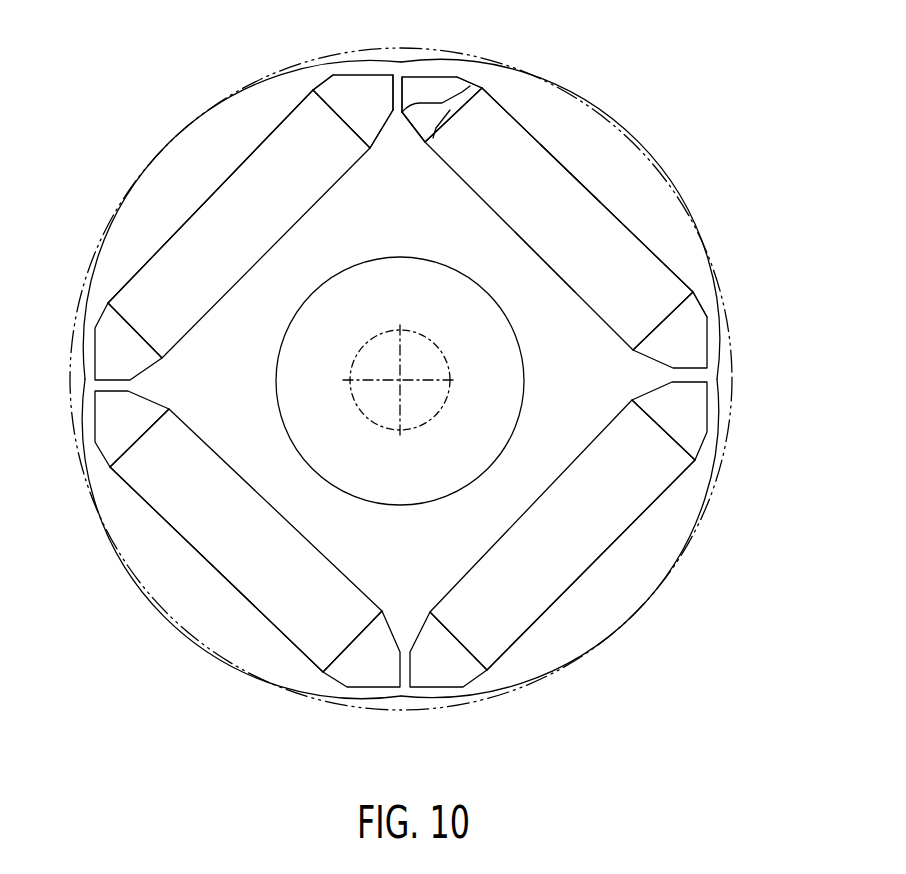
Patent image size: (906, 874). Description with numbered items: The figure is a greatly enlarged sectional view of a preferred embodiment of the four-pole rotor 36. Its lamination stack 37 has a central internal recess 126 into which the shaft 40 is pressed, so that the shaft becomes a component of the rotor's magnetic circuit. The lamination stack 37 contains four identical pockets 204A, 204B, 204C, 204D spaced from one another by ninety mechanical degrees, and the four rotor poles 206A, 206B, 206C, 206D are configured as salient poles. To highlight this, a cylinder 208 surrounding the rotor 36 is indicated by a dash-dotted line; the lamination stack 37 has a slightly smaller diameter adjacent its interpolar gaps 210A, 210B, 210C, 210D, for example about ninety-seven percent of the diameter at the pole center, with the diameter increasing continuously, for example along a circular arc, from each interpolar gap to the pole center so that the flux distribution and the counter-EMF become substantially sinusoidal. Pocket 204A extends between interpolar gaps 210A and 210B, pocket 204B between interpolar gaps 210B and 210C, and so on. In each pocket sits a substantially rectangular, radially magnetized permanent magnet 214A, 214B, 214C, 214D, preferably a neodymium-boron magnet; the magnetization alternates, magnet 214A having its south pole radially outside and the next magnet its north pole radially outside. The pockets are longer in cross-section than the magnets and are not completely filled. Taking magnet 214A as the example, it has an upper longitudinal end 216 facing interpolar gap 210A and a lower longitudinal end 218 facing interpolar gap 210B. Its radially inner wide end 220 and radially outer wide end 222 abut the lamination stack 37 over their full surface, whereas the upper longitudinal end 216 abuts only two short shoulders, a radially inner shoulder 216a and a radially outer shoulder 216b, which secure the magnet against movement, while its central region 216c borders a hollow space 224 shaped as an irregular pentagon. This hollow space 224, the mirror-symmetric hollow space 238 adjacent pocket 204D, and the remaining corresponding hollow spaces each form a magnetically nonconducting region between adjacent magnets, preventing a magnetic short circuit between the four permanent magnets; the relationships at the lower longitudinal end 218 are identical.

The rotor 36 is at (152, 70).
The lamination stack 37 is at (362, 251).
The shaft 40 is at (505, 363).
The internal recess 126 is at (487, 466).
The pocket 204A is at (629, 235).
The pocket 204B is at (624, 540).
The pocket 204C is at (250, 607).
The pocket 204D is at (234, 186).
The rotor pole 206A is at (641, 150).
The rotor pole 206B is at (632, 618).
The rotor pole 206C is at (160, 613).
The rotor pole 206D is at (158, 153).
The cylinder 208 is at (735, 390).
The interpolar gap 210A is at (397, 66).
The interpolar gap 210B is at (717, 374).
The interpolar gap 210C is at (403, 698).
The interpolar gap 210D is at (90, 384).
The permanent magnet 214A is at (537, 178).
The permanent magnet 214B is at (640, 497).
The permanent magnet 214C is at (318, 604).
The permanent magnet 214D is at (210, 290).
The upper longitudinal end 216 is at (452, 115).
The shoulder 216a is at (425, 142).
The shoulder 216b is at (473, 95).
The central region 216c is at (399, 118).
The lower longitudinal end 218 is at (673, 316).
The wide end 220 is at (551, 268).
The wide end 222 is at (568, 170).
The hollow space 224 is at (438, 82).
The hollow space 238 is at (325, 82).